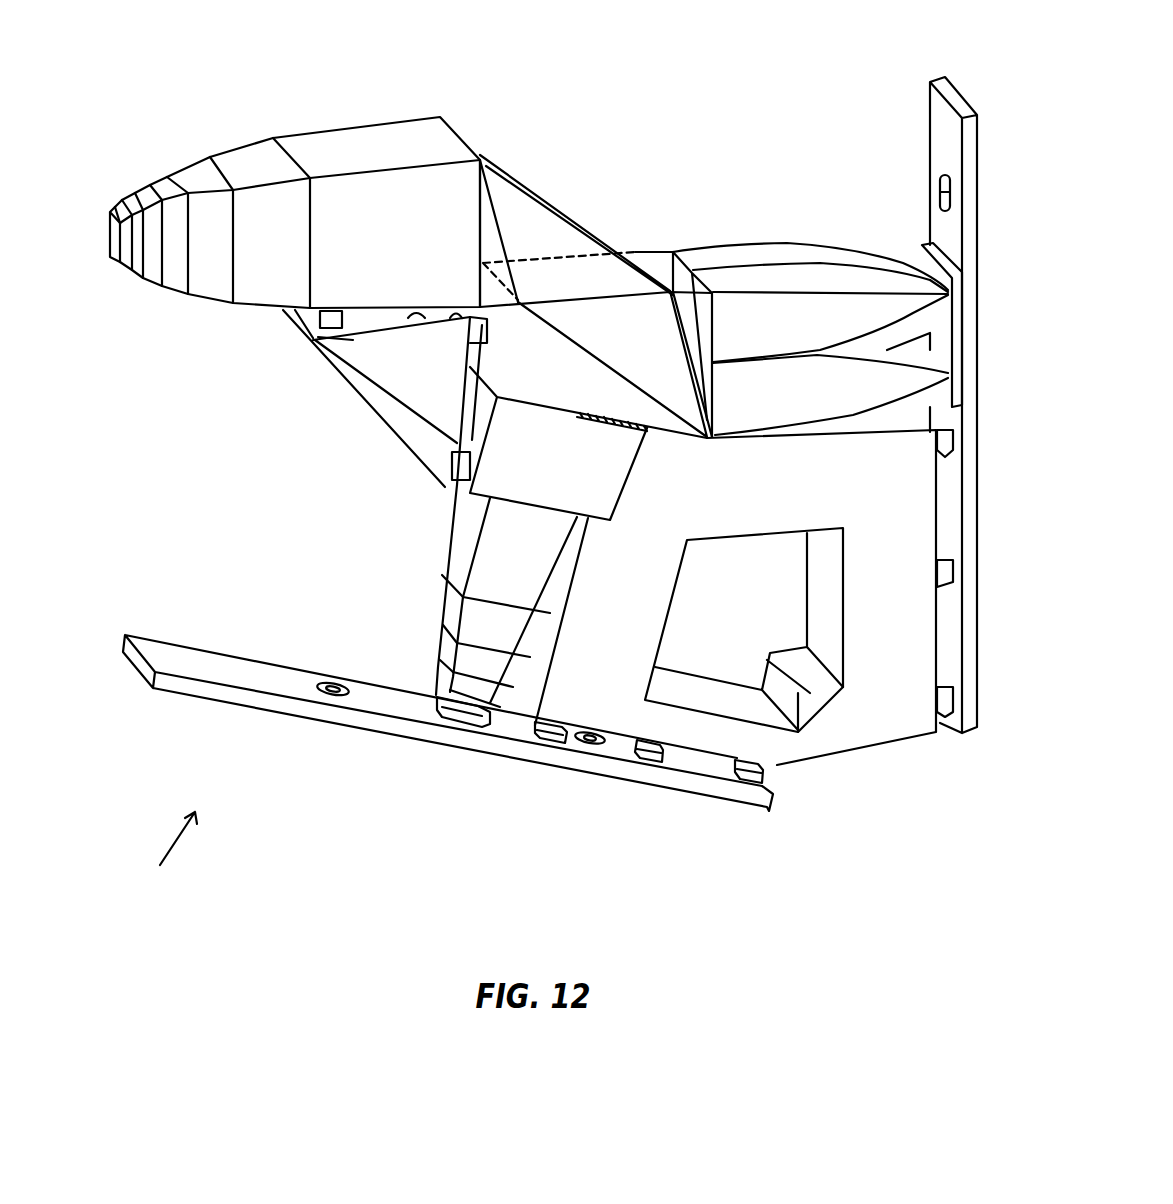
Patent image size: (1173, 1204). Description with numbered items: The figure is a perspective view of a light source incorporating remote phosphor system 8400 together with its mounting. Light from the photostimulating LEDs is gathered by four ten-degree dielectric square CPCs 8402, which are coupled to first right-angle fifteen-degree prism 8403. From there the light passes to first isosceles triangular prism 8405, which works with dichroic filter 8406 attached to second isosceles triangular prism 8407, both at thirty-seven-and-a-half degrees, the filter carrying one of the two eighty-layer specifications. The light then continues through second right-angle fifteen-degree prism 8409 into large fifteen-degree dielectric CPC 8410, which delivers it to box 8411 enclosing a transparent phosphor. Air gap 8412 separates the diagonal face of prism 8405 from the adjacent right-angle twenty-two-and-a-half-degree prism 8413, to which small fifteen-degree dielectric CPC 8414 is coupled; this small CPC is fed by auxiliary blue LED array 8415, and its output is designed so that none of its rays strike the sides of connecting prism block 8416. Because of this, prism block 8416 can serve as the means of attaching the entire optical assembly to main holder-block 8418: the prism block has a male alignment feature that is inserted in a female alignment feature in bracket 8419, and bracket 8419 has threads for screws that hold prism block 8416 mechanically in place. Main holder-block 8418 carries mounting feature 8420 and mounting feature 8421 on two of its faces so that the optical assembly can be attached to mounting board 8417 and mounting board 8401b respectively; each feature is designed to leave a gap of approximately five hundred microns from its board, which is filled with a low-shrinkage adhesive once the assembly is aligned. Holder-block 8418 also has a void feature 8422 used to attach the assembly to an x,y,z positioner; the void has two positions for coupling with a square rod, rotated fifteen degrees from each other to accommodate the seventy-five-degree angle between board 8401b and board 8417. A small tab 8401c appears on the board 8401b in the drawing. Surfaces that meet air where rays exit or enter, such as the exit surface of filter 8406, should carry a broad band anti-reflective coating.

The remote phosphor system 8400 is at (159, 867).
The mounting board 8401b is at (940, 110).
The bracket tab 8401c is at (938, 273).
The dielectric square CPCs 8402 is at (795, 250).
The first right-angle prism 8403 is at (675, 267).
The first isosceles triangular prism 8405 is at (635, 340).
The dichroic filter 8406 is at (587, 277).
The second isosceles triangular prism 8407 is at (520, 175).
The second right-angle prism 8409 is at (480, 157).
The large dielectric CPC 8410 is at (245, 165).
The box enclosing transparent phosphor 8411 is at (108, 207).
The air gap 8412 is at (617, 387).
The right-angle prism 8413 is at (547, 373).
The small dielectric CPC 8414 is at (458, 549).
The auxiliary blue LED array 8415 is at (453, 702).
The connecting prism block 8416 is at (587, 473).
The mounting board 8417 is at (405, 735).
The main holder-block 8418 is at (865, 698).
The bracket 8419 is at (370, 388).
The mounting feature 8420 is at (740, 762).
The mounting feature 8421 is at (948, 717).
The void feature 8422 is at (744, 630).